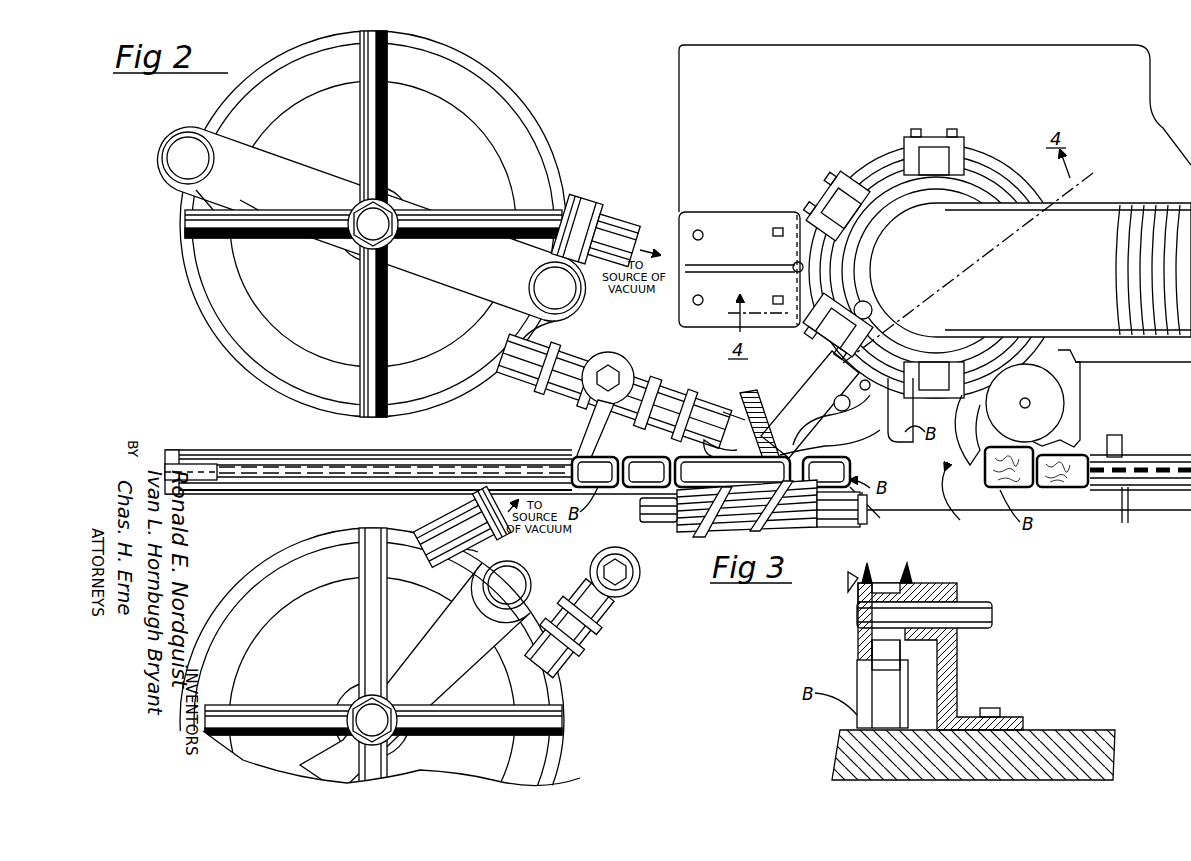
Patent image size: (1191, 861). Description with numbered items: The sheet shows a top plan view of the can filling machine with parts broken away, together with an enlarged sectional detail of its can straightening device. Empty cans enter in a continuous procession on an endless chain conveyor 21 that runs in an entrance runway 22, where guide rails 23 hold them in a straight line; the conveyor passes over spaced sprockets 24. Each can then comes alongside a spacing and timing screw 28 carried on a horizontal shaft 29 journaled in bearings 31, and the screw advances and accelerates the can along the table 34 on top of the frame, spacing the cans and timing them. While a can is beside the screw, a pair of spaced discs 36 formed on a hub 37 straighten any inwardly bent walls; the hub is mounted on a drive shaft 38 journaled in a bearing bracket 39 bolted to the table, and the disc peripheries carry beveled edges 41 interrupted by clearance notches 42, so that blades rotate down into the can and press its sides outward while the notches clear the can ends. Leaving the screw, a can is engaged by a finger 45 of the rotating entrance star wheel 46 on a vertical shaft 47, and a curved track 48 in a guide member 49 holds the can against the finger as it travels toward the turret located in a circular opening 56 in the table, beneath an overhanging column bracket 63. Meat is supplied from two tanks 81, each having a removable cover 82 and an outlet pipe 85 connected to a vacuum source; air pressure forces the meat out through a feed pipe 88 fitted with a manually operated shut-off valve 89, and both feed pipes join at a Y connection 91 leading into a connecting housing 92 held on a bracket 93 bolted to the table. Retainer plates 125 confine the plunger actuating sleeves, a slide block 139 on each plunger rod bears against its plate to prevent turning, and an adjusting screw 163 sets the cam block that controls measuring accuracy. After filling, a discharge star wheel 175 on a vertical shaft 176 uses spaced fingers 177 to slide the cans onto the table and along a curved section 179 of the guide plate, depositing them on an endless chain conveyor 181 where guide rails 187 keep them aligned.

In FIG. 2, the endless chain conveyor 21 is at (407, 470).
In FIG. 2, the entrance runway 22 is at (460, 455).
In FIG. 2, the guide rails 23 is at (298, 460).
In FIG. 2, the sprockets 24 is at (205, 476).
In FIG. 2, the spacing and timing screw 28 is at (722, 522).
In FIG. 2, the horizontal shaft 29 is at (864, 512).
In FIG. 2, the bearings 31 is at (650, 508).
In FIG. 2, the table 34 is at (900, 482).
In FIG. 3, the table 34 is at (1045, 742).
In FIG. 2, the discs 36 is at (700, 468).
In FIG. 3, the discs 36 is at (910, 590).
In FIG. 3, the hub 37 is at (900, 590).
In FIG. 3, the drive shaft 38 is at (972, 606).
In FIG. 3, the bearing bracket 39 is at (955, 672).
In FIG. 3, the beveled edges 41 is at (862, 572).
In FIG. 3, the clearance notches 42 is at (848, 580).
In FIG. 2, the finger 45 is at (808, 438).
In FIG. 2, the entrance star wheel 46 is at (880, 452).
In FIG. 2, the vertical shaft 47 is at (848, 407).
In FIG. 2, the curved track 48 is at (876, 508).
In FIG. 2, the guide member 49 is at (961, 503).
In FIG. 2, the circular opening 56 is at (868, 148).
In FIG. 2, the overhanging column bracket 63 is at (1030, 270).
In FIG. 2, the tanks 81 is at (246, 370).
In FIG. 3, the tanks 81 is at (258, 560).
In FIG. 2, the removable cover 82 is at (373, 224).
In FIG. 3, the removable cover 82 is at (372, 719).
In FIG. 2, the outlet pipe 85 is at (614, 232).
In FIG. 3, the outlet pipe 85 is at (489, 529).
In FIG. 2, the feed pipe 88 is at (552, 378).
In FIG. 3, the feed pipe 88 is at (585, 628).
In FIG. 2, the shut-off valve 89 is at (612, 360).
In FIG. 3, the shut-off valve 89 is at (632, 586).
In FIG. 2, the Y connection 91 is at (722, 398).
In FIG. 2, the connecting housing 92 is at (784, 392).
In FIG. 2, the bracket 93 is at (766, 225).
In FIG. 2, the retainer plates 125 is at (935, 135).
In FIG. 2, the slide block 139 is at (945, 162).
In FIG. 2, the adjusting screw 163 is at (873, 308).
In FIG. 2, the discharge star wheel 175 is at (1066, 405).
In FIG. 2, the vertical shaft 176 is at (1030, 408).
In FIG. 2, the fingers 177 is at (1076, 362).
In FIG. 2, the curved section 179 is at (958, 462).
In FIG. 2, the endless chain conveyor 181 is at (1123, 455).
In FIG. 2, the guide rails 187 is at (1119, 518).